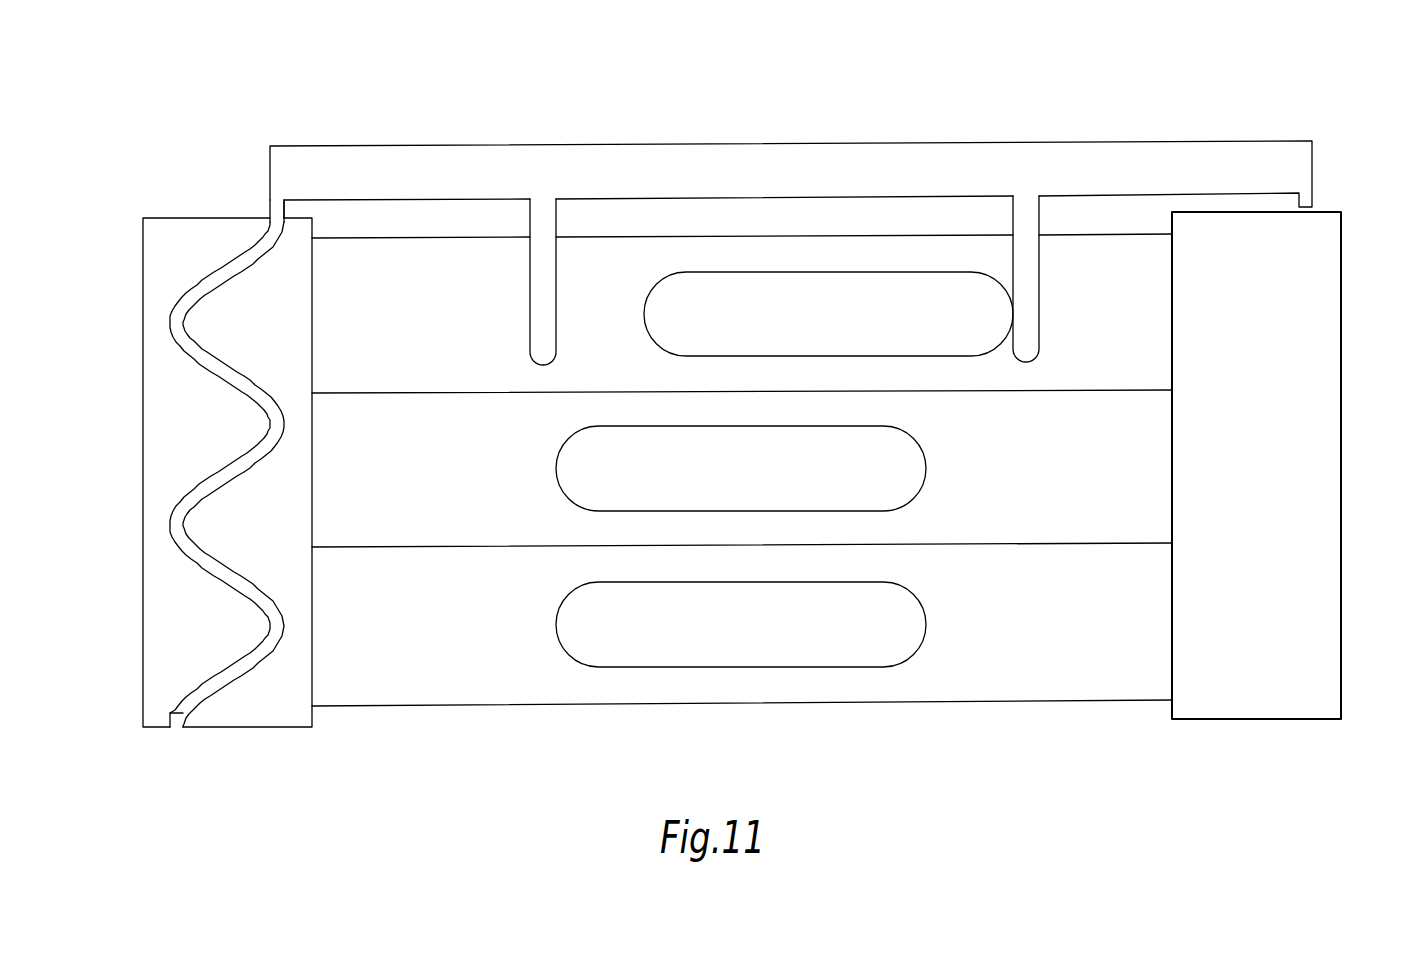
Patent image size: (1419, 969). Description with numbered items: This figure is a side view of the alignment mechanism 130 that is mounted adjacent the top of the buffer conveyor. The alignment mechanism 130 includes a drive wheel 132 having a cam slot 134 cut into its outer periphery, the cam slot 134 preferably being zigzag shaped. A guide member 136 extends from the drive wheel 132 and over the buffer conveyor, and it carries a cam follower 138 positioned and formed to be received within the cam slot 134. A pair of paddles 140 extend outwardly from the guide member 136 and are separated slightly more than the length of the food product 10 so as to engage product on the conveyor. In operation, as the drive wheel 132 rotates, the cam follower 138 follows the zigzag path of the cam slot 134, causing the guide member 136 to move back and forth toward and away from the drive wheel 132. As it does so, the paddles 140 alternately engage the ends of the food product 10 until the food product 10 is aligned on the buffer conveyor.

The alignment mechanism 130 is at (1308, 102).
The guide member 136 is at (758, 128).
The paddles 140 is at (530, 215).
The cam follower 138 is at (268, 210).
The drive wheel 132 is at (175, 422).
The cam slot 134 is at (170, 305).
The food product 10 is at (950, 356).